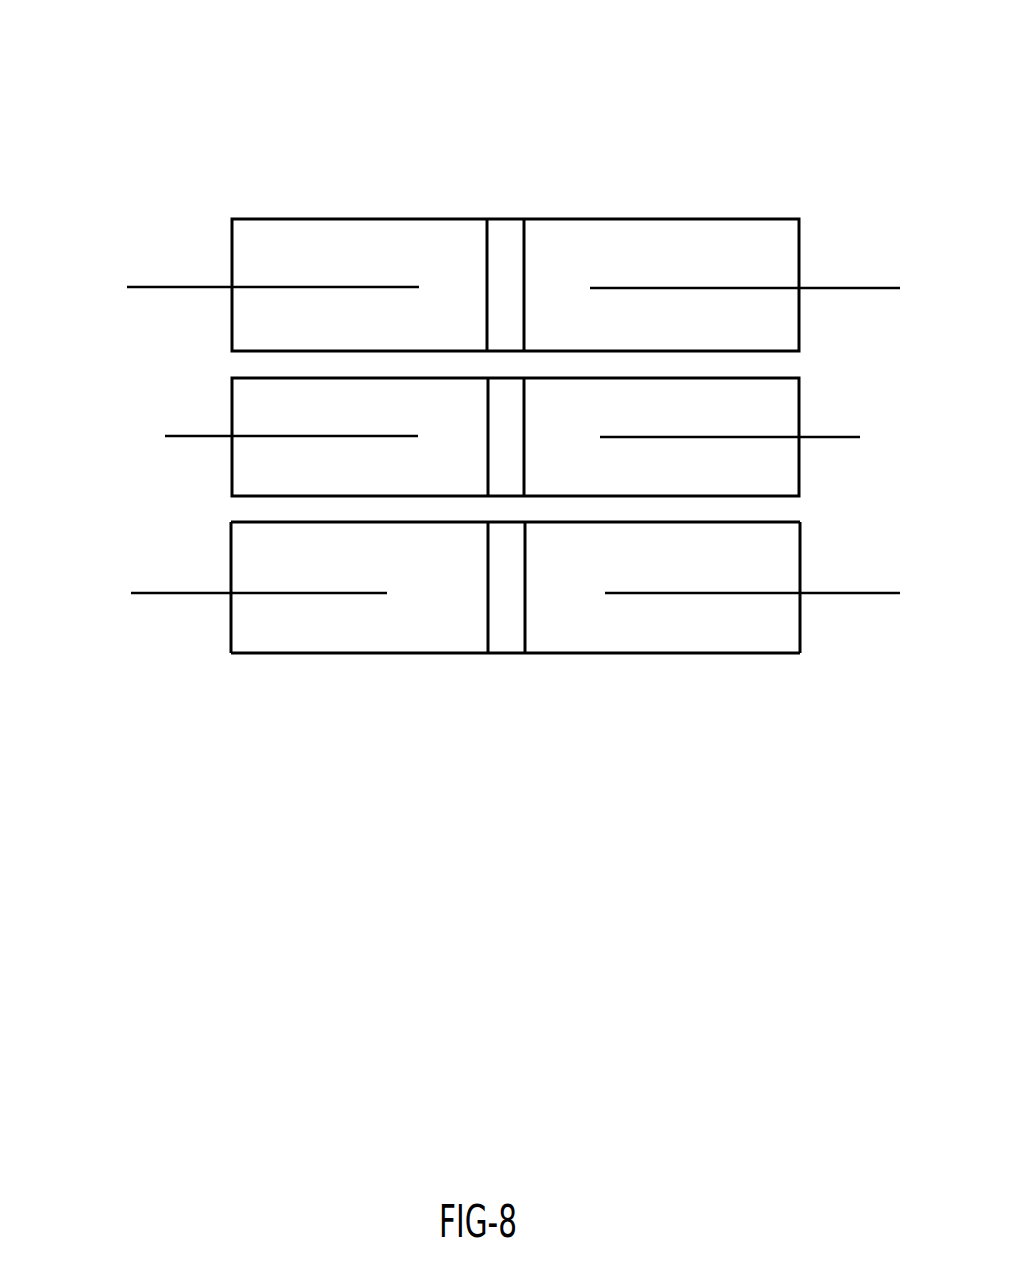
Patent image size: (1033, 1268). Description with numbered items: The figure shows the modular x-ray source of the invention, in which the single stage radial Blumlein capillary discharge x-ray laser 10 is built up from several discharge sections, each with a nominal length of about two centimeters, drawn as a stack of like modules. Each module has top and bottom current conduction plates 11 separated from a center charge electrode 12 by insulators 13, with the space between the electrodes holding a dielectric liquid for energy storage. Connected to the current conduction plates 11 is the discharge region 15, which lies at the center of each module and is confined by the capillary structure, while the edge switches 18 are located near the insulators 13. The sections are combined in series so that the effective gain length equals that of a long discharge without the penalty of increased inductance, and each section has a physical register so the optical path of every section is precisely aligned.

The single stage radial Blumlein capillary discharge x-ray laser 10 is at (468, 400).
The current conduction plates 11 is at (363, 653).
The center charge electrode 12 is at (173, 286).
The insulators 13 is at (255, 623).
The discharge region 15 is at (506, 631).
The edge switches 18 is at (255, 566).